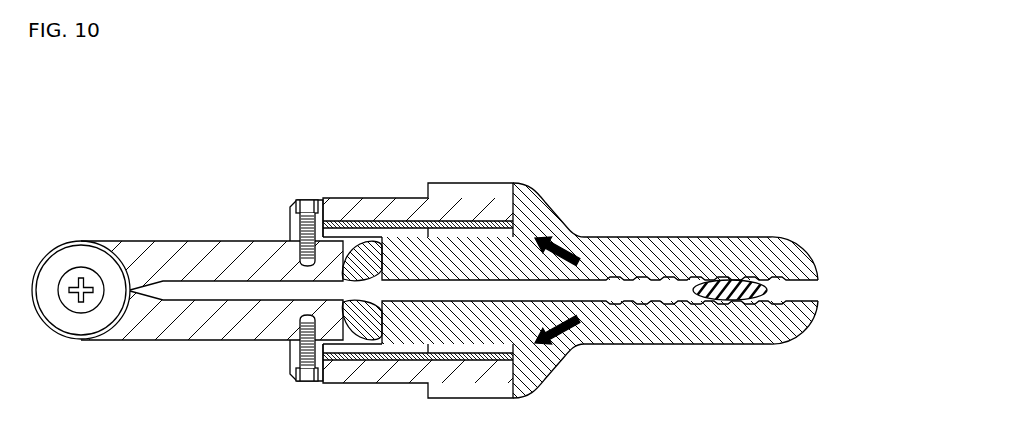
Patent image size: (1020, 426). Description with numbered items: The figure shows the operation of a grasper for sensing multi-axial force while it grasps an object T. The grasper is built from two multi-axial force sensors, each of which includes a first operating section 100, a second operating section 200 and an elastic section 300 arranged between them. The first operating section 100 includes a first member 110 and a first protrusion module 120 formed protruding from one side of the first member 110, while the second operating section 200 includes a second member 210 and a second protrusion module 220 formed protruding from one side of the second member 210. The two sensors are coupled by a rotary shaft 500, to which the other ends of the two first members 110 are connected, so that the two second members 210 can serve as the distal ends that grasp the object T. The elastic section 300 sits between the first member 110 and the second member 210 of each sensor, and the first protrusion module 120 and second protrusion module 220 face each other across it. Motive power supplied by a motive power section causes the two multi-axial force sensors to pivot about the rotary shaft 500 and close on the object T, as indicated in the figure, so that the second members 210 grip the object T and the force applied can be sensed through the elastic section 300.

The first operating section 100 is at (322, 133).
The first member 110 is at (200, 250).
The first protrusion module 120 is at (326, 200).
The second operating section 200 is at (683, 119).
The second member 210 is at (643, 237).
The second protrusion module 220 is at (539, 194).
The elastic section 300 is at (367, 253).
The rotary shaft 500 is at (76, 267).
The object T is at (738, 290).